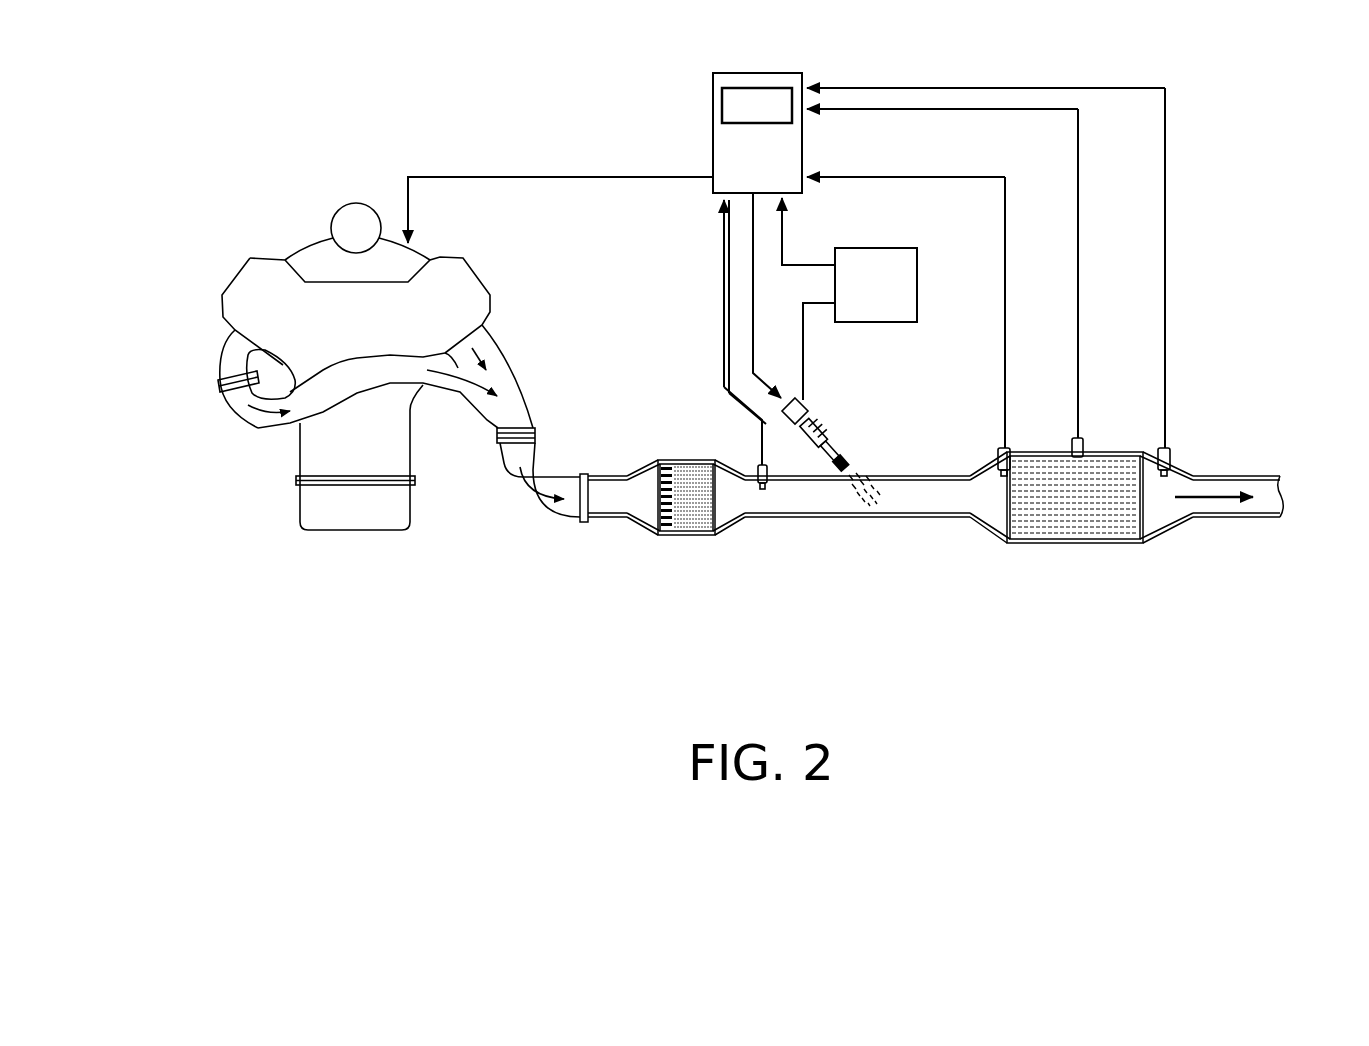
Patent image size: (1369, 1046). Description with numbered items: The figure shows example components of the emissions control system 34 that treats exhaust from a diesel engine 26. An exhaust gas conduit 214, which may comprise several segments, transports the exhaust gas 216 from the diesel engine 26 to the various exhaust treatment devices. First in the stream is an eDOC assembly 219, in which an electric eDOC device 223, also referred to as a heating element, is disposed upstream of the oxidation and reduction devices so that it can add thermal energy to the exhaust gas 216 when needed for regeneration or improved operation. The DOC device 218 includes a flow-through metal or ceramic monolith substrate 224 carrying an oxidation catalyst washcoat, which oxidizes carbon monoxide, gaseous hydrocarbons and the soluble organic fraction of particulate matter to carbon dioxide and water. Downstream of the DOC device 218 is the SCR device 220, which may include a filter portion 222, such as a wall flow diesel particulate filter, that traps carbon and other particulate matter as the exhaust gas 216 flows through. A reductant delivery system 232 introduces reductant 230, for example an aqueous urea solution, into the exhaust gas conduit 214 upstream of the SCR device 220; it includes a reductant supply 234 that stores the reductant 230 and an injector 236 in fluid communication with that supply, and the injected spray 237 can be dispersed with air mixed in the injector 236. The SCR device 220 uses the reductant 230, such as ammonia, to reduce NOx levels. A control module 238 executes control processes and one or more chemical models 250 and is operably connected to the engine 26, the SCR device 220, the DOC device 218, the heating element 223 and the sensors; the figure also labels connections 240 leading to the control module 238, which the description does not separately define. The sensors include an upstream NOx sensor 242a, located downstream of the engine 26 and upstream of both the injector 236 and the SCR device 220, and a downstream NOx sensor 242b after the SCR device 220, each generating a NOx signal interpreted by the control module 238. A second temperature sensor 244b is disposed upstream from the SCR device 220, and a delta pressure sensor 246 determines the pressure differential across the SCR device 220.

The diesel engine 26 is at (308, 222).
The exhaust gas conduit 214 is at (501, 360).
The exhaust gas 216 is at (528, 495).
The emissions control system 34 is at (795, 546).
The DOC device 218 is at (671, 546).
The eDOC assembly 219 is at (696, 551).
The eDOC device 223 is at (658, 508).
The substrate 224 is at (681, 462).
The SCR device 220 is at (1104, 549).
The filter portion 222 is at (1060, 530).
The control module 238 is at (713, 133).
The chemical model 250 is at (778, 120).
The reductant delivery system 232 is at (1068, 76).
The sensor signal lines 240 is at (1186, 338).
The reductant 230 is at (891, 305).
The reductant supply 234 is at (918, 278).
The injector 236 is at (853, 470).
The reductant spray 237 is at (860, 490).
The upstream NOx sensor 242a is at (755, 473).
The downstream NOx sensor 242b is at (1172, 460).
The second temperature sensor 244b is at (996, 458).
The pressure sensor 246 is at (1090, 450).